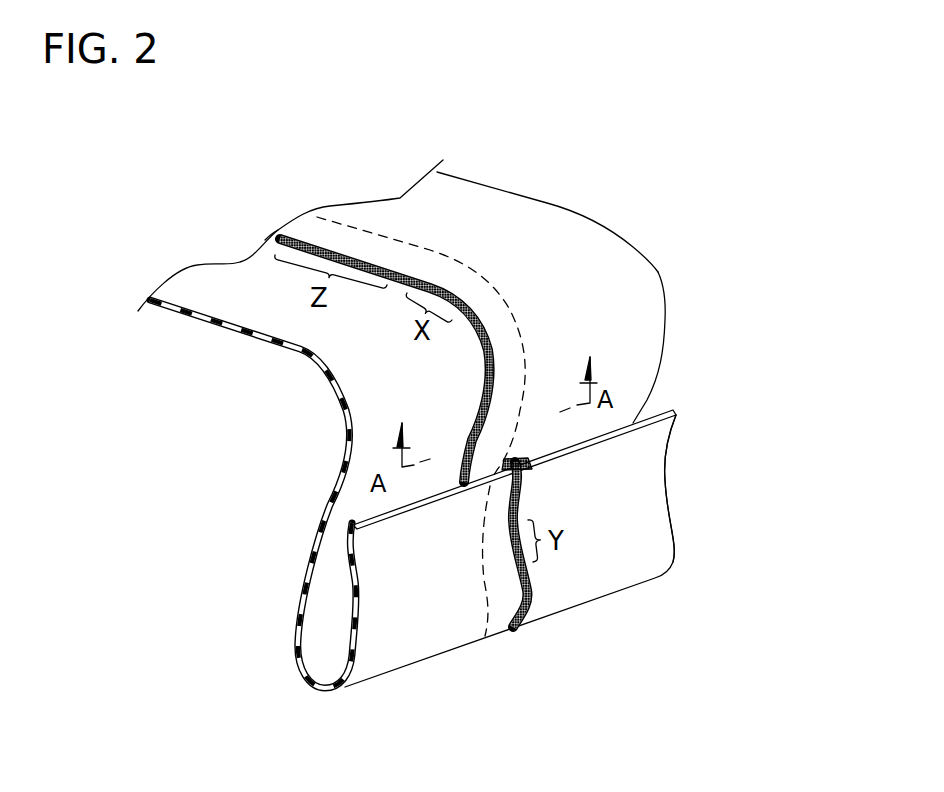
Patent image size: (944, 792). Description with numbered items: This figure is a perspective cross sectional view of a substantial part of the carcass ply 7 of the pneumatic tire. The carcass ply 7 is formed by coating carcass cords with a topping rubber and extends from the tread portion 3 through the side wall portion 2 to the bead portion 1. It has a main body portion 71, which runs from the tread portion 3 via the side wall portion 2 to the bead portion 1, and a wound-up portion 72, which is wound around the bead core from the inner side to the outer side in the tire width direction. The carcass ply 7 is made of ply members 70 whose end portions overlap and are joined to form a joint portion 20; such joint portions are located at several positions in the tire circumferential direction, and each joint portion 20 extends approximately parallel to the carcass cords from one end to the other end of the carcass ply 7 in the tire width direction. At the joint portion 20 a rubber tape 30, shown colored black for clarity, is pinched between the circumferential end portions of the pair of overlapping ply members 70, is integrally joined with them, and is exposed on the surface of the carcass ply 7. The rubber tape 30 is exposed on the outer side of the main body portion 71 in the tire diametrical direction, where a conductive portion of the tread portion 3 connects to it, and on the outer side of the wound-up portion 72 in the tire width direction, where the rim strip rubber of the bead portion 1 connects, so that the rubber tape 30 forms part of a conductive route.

The bead portion 1 is at (695, 547).
The side wall portion 2 is at (683, 387).
The tread portion 3 is at (472, 170).
The carcass ply 7 is at (315, 367).
The joint portion 20 is at (277, 230).
The rubber tape 30 is at (487, 370).
The ply member 70 is at (388, 208).
The main body portion 71 is at (658, 272).
The wound-up portion 72 is at (670, 492).